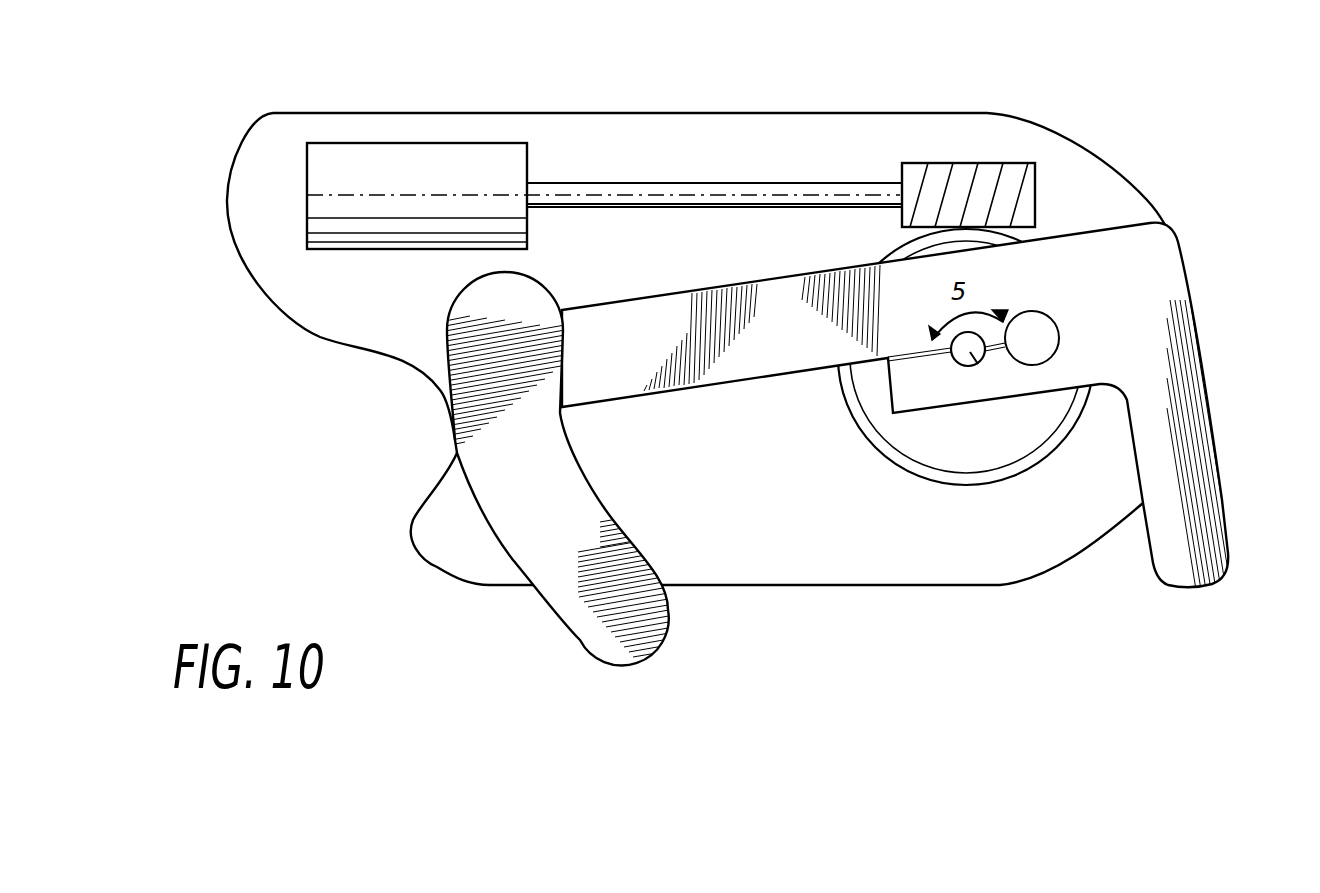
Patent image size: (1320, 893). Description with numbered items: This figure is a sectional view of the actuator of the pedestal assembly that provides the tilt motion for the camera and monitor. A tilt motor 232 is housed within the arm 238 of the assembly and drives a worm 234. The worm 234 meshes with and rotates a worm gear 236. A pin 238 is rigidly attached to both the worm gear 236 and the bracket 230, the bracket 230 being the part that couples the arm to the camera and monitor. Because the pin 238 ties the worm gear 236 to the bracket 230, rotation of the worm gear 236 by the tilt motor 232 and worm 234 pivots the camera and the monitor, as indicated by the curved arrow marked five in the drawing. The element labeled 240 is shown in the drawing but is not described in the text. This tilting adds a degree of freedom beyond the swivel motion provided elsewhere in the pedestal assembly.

The bracket 230 is at (763, 350).
The tilt motor 232 is at (400, 163).
The worm 234 is at (963, 195).
The worm gear 236 is at (973, 445).
The pin 238 is at (980, 365).
The trigger handle 240 is at (532, 527).